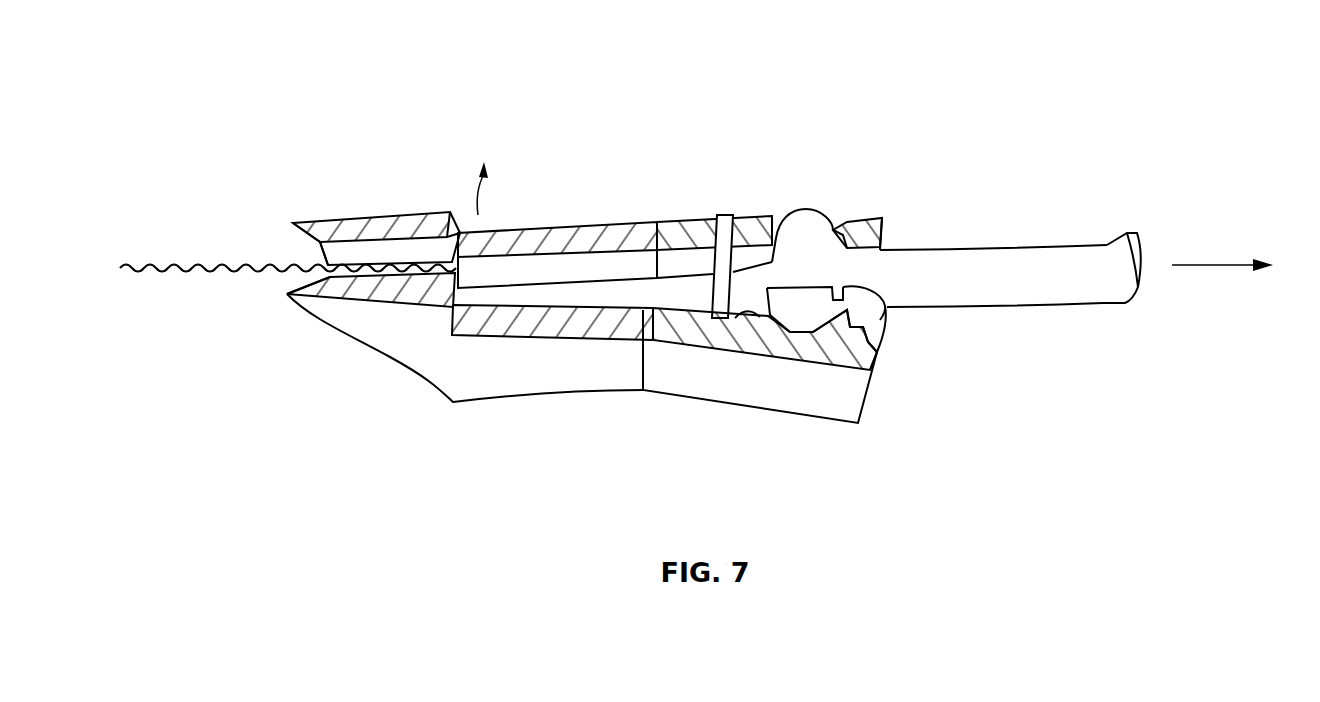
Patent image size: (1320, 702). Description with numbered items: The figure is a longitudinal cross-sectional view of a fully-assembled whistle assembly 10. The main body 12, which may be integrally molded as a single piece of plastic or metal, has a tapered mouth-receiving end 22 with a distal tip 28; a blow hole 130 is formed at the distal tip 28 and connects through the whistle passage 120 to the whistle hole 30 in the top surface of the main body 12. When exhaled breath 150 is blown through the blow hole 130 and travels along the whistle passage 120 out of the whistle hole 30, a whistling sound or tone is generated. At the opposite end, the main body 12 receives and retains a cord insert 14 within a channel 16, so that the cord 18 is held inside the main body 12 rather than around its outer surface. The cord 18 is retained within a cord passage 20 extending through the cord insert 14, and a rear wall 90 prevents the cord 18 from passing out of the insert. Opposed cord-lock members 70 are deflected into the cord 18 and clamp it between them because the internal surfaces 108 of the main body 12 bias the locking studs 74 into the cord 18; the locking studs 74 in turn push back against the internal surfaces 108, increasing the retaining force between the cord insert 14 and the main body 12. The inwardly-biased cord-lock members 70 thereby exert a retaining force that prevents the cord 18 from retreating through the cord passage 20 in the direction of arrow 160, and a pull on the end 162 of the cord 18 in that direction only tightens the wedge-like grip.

The whistle assembly 10 is at (490, 50).
The main body 12 is at (812, 423).
The cord insert 14 is at (880, 309).
The channel 16 is at (872, 343).
The cord 18 is at (1040, 247).
The cord passage 20 is at (881, 243).
The mouth-receiving end 22 is at (378, 216).
The distal tip 28 is at (295, 221).
The whistle hole 30 is at (517, 224).
The cord-lock members 70 is at (807, 222).
The locking studs 74 is at (834, 224).
The rear wall 90 is at (718, 214).
The internal surfaces 108 is at (750, 247).
The whistle passage 120 is at (406, 274).
The blow hole 130 is at (327, 273).
The exhaled breath 150 is at (175, 269).
The arrow 160 is at (1224, 268).
The end of the cord 162 is at (1130, 233).